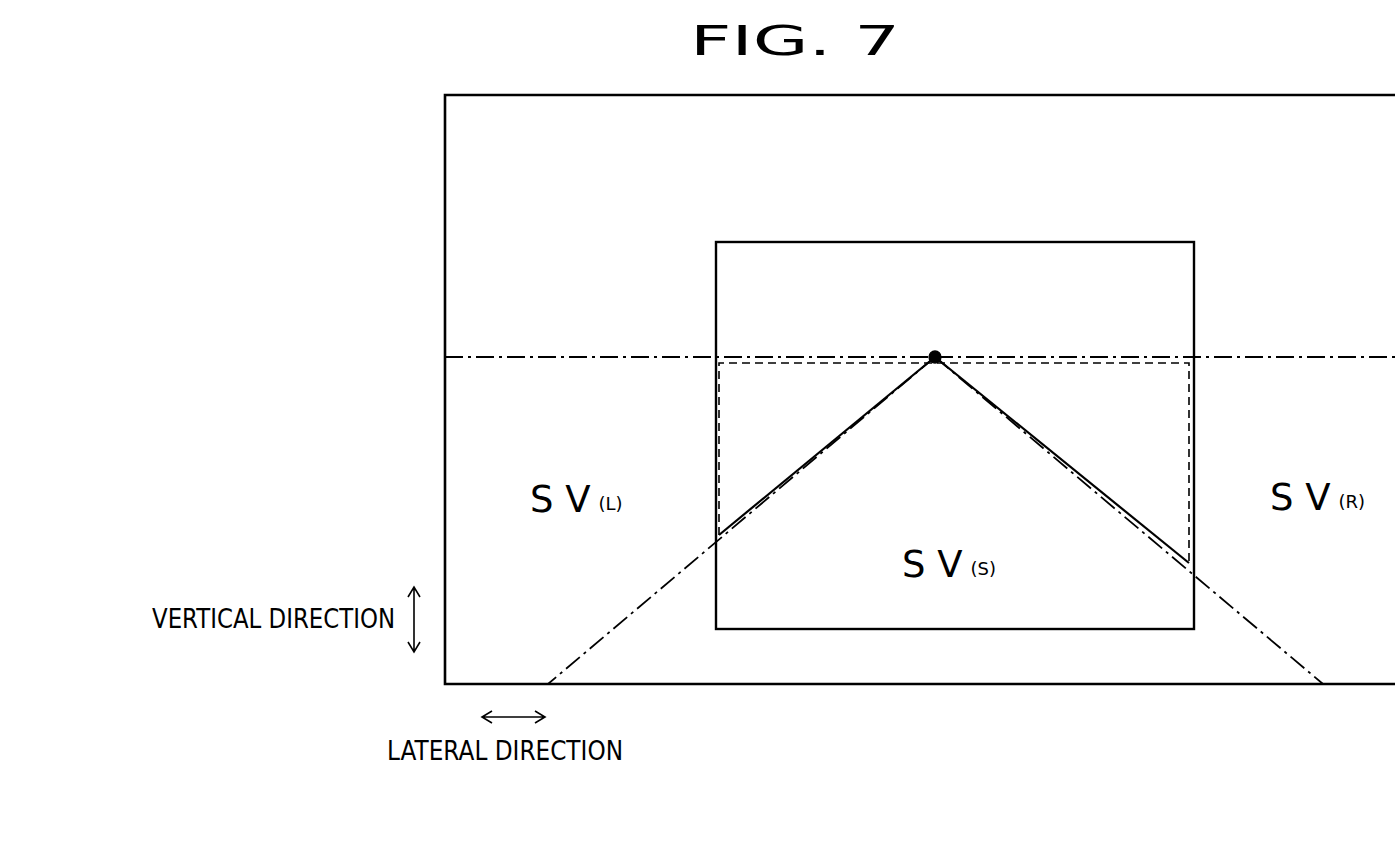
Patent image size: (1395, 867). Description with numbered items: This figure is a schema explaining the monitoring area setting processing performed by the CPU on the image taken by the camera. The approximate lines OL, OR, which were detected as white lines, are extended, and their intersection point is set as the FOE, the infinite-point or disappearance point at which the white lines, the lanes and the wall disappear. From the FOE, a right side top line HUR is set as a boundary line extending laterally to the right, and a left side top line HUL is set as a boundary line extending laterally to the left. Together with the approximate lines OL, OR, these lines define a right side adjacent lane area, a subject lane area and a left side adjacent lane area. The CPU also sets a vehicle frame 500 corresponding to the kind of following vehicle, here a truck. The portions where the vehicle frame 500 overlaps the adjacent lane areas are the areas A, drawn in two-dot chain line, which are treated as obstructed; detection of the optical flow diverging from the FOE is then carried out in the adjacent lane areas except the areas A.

The vehicle frame 500 is at (1105, 242).
The left side top line HUL is at (586, 356).
The right side top line HUR is at (1223, 357).
The element FOE is at (937, 355).
The area A is at (719, 383).
The approximate line OL is at (771, 485).
The approximate line OR is at (1103, 488).